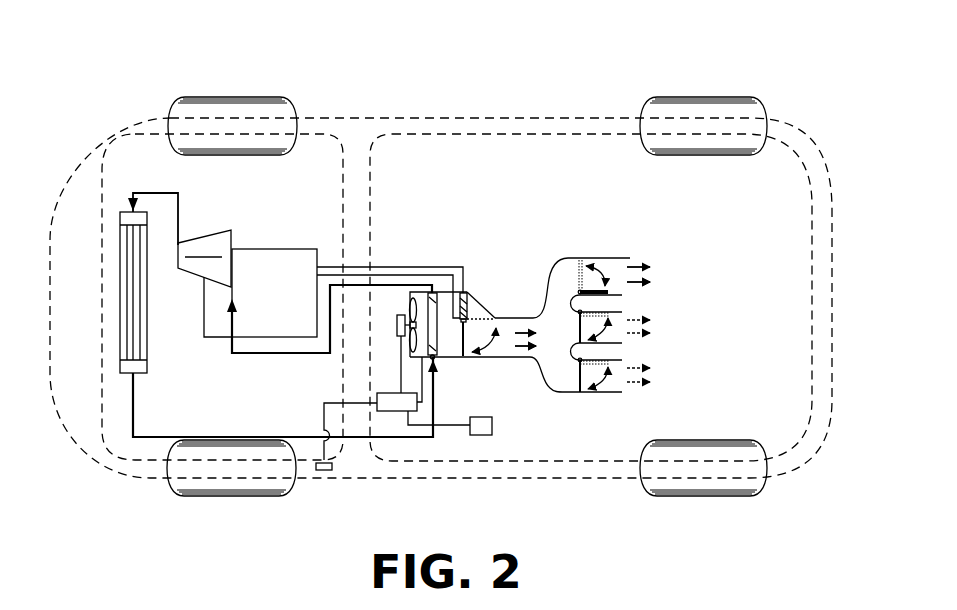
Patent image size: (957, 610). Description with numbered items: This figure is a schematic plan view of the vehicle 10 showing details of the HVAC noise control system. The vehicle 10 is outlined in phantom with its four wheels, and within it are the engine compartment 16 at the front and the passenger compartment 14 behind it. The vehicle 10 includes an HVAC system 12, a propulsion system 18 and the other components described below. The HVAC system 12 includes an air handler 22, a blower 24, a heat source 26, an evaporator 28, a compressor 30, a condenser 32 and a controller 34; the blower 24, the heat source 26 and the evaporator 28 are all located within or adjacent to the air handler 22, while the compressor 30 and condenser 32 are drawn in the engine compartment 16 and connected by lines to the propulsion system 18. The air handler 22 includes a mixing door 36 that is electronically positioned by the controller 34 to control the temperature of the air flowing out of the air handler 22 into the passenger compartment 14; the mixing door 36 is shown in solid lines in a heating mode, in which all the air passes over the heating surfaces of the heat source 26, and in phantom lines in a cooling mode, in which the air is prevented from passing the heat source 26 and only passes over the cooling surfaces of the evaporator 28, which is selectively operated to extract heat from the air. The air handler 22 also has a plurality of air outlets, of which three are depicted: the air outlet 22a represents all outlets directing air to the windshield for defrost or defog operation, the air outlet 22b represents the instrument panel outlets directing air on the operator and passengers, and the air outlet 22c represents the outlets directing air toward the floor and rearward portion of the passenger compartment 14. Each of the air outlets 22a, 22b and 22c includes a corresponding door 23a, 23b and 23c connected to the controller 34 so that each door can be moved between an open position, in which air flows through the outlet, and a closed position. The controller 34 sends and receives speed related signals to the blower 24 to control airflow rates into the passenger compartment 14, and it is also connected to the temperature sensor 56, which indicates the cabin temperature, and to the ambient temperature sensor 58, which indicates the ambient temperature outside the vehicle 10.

The vehicle 10 is at (256, 64).
The HVAC system 12 is at (157, 176).
The passenger compartment 14 is at (575, 120).
The engine compartment 16 is at (317, 130).
The propulsion system 18 is at (263, 262).
The air handler 22 is at (450, 362).
The air outlet 22a is at (602, 258).
The air outlet 22b is at (620, 312).
The air outlet 22c is at (620, 392).
The door 23a is at (592, 289).
The door 23b is at (576, 326).
The door 23c is at (578, 391).
The blower 24 is at (397, 325).
The heat source 26 is at (470, 297).
The evaporator 28 is at (437, 295).
The compressor 30 is at (203, 245).
The condenser 32 is at (142, 342).
The controller 34 is at (397, 407).
The mixing door 36 is at (467, 337).
The temperature sensor 56 is at (482, 426).
The ambient temperature sensor 58 is at (325, 474).